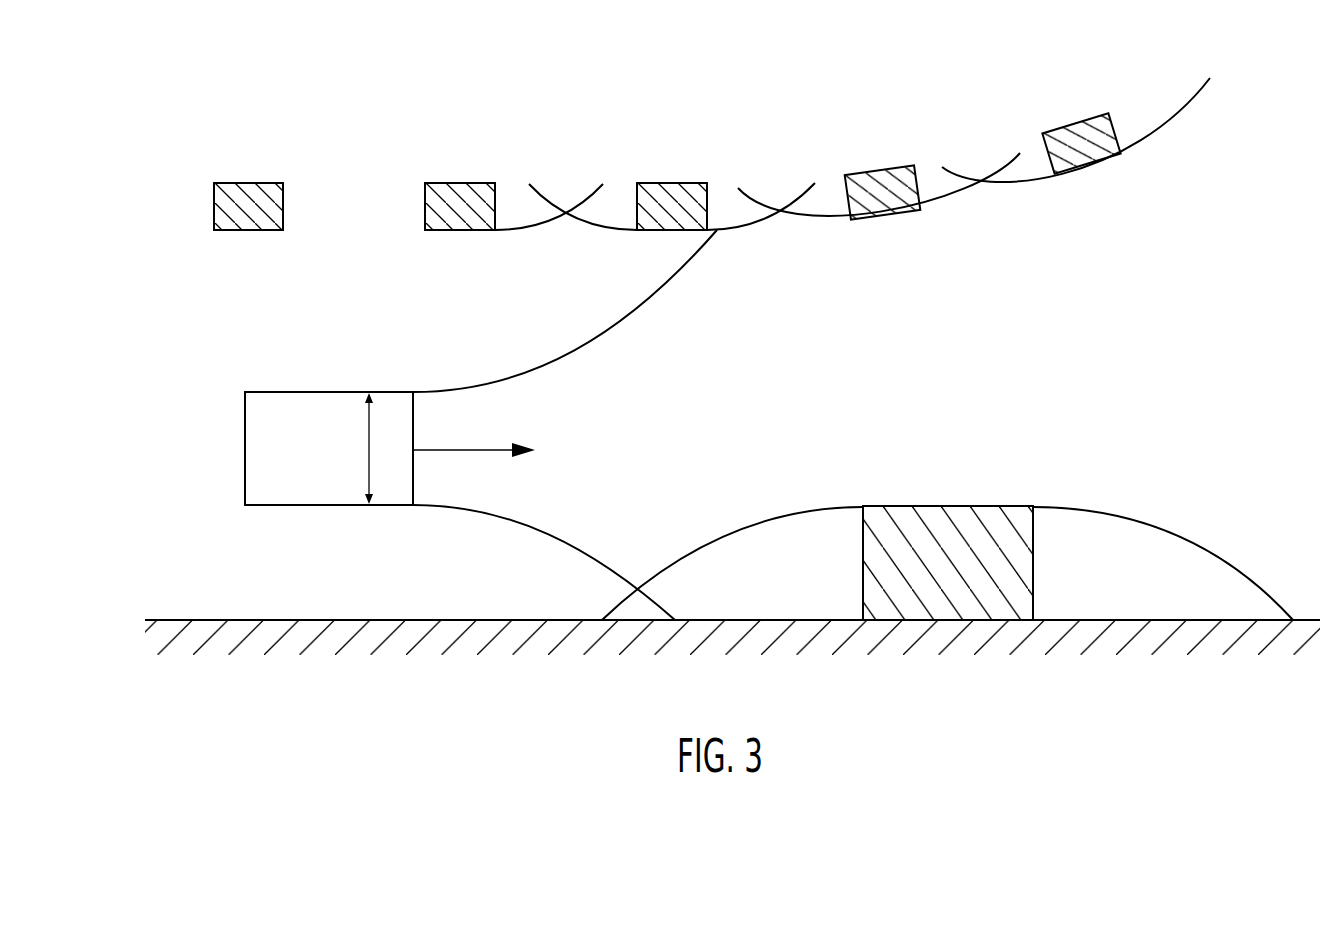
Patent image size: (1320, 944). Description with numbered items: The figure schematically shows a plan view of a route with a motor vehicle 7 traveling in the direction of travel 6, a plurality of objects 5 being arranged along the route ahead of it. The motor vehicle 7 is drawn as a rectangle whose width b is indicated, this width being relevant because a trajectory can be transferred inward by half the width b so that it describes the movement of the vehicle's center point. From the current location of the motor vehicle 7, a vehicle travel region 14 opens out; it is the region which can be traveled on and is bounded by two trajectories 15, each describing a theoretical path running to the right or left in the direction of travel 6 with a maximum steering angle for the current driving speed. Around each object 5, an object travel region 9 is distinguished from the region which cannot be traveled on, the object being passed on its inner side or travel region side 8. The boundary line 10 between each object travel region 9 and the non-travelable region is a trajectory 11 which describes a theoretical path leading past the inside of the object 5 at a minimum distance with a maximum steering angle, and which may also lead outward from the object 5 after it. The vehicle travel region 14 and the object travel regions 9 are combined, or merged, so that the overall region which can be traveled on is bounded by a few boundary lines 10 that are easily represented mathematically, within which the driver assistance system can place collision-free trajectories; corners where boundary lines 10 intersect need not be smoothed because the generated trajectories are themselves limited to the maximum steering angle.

The object 5 is at (266, 187).
The direction of travel 6 is at (488, 453).
The motor vehicle 7 is at (317, 463).
The inner side / travel region side 8 is at (895, 488).
The object travel region 9 is at (681, 268).
The boundary line 10 is at (472, 385).
The trajectory 11 is at (795, 199).
The vehicle travel region 14 is at (628, 462).
The trajectory (boundary line of vehicle travel region) 15 is at (540, 366).
The width of the motor vehicle b is at (369, 448).